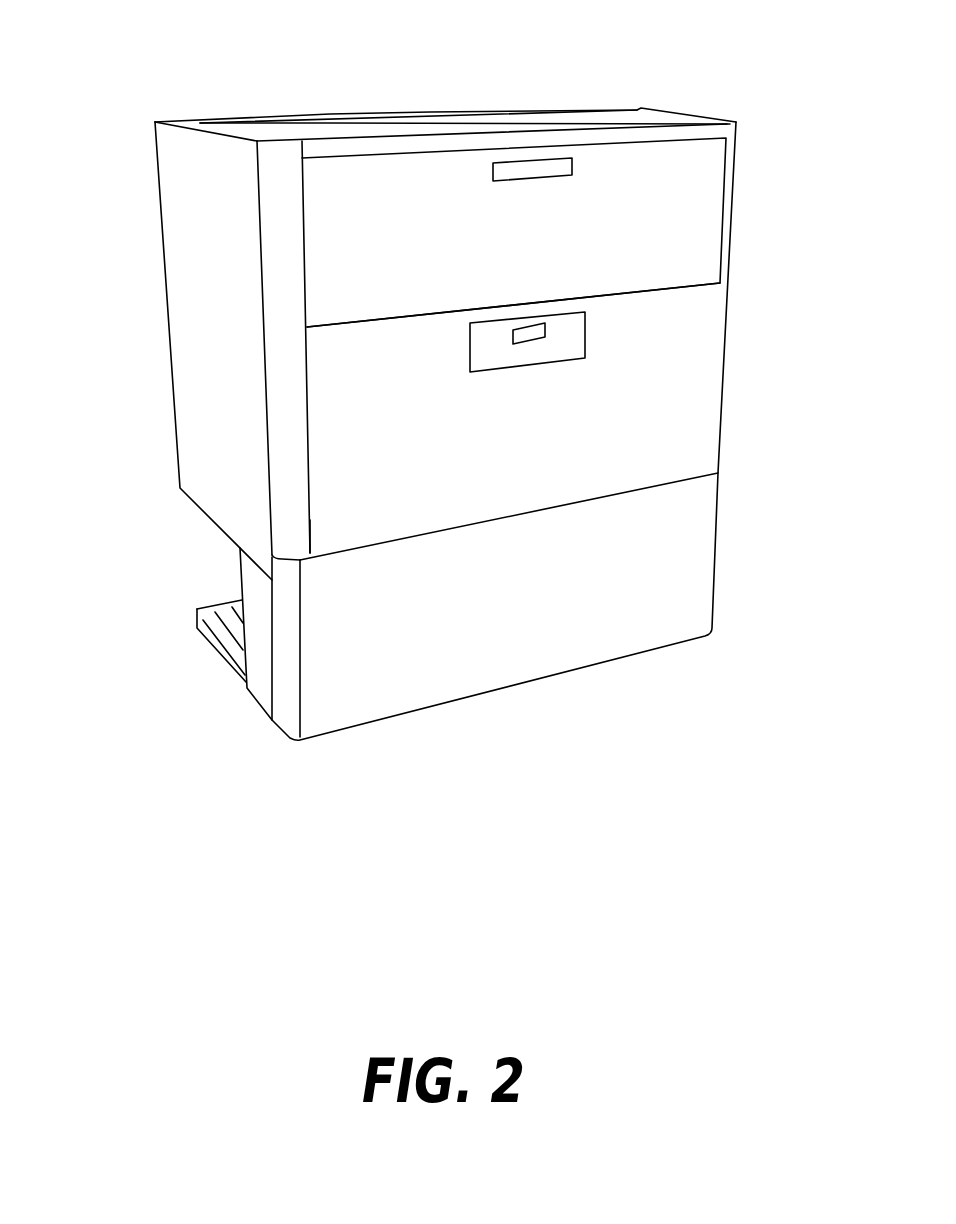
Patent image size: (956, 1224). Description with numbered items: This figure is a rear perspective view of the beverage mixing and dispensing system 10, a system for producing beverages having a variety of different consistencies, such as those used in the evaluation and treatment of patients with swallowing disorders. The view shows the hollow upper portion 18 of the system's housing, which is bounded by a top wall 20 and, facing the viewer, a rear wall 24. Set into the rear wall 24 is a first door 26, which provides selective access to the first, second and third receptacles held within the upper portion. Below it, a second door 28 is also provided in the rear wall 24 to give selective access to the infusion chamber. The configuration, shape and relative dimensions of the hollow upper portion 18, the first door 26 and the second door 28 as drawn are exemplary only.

The beverage mixing and dispensing system 10 is at (435, 375).
The hollow upper portion 18 is at (272, 244).
The top wall 20 is at (440, 114).
The rear wall 24 is at (670, 425).
The first door 26 is at (680, 190).
The second door 28 is at (487, 363).